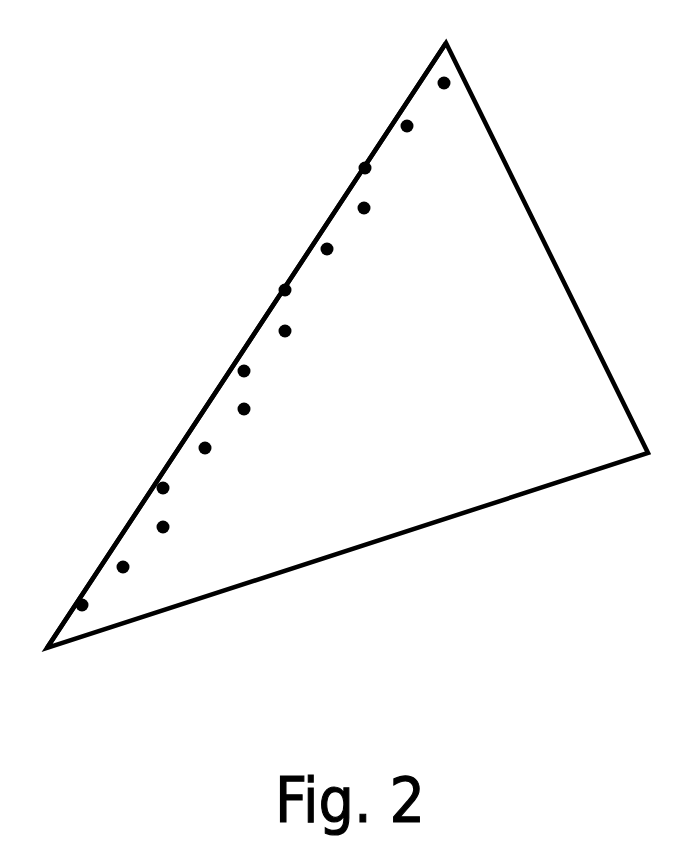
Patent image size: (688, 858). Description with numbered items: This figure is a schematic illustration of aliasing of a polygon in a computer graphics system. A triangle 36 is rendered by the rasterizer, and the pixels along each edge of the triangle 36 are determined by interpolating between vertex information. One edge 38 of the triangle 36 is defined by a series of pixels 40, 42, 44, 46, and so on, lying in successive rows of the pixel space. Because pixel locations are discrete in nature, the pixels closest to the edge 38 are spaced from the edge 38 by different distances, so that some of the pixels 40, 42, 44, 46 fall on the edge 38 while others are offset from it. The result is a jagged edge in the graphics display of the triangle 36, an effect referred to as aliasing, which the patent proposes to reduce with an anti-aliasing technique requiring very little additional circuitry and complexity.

The triangle 36 is at (549, 230).
The edge 38 is at (330, 217).
The pixel 40 is at (370, 207).
The pixel 42 is at (333, 251).
The pixel 44 is at (291, 291).
The pixel 46 is at (285, 338).